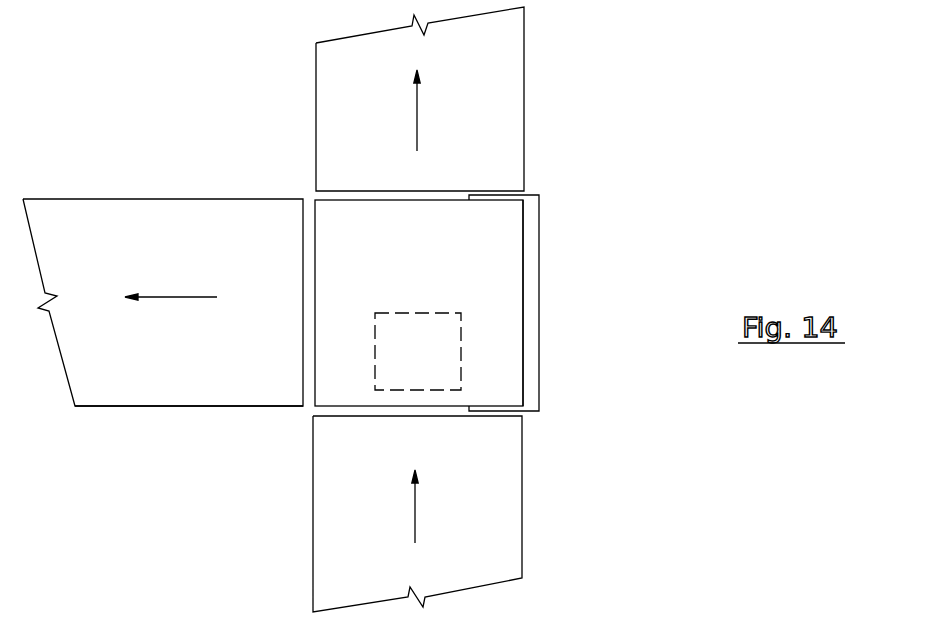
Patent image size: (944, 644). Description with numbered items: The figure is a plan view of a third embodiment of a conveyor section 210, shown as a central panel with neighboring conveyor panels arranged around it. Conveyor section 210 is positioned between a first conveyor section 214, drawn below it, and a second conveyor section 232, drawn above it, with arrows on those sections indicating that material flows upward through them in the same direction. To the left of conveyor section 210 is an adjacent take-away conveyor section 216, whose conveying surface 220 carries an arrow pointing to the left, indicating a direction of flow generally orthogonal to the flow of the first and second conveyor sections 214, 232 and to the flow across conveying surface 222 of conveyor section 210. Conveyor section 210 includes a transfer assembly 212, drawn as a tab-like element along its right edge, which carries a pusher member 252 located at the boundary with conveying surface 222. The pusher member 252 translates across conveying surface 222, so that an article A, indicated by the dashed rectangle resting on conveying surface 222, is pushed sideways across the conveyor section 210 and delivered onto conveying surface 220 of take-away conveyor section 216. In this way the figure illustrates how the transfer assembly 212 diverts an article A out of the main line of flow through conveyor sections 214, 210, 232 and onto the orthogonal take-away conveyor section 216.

The conveyor section 210 is at (361, 309).
The transfer assembly 212 is at (555, 285).
The first conveyor section 214 is at (509, 509).
The take-away conveyor section 216 is at (190, 426).
The conveying surface 220 is at (210, 351).
The conveying surface 222 is at (445, 256).
The second conveyor section 232 is at (543, 94).
The pusher member 252 is at (523, 353).
The article A is at (428, 340).